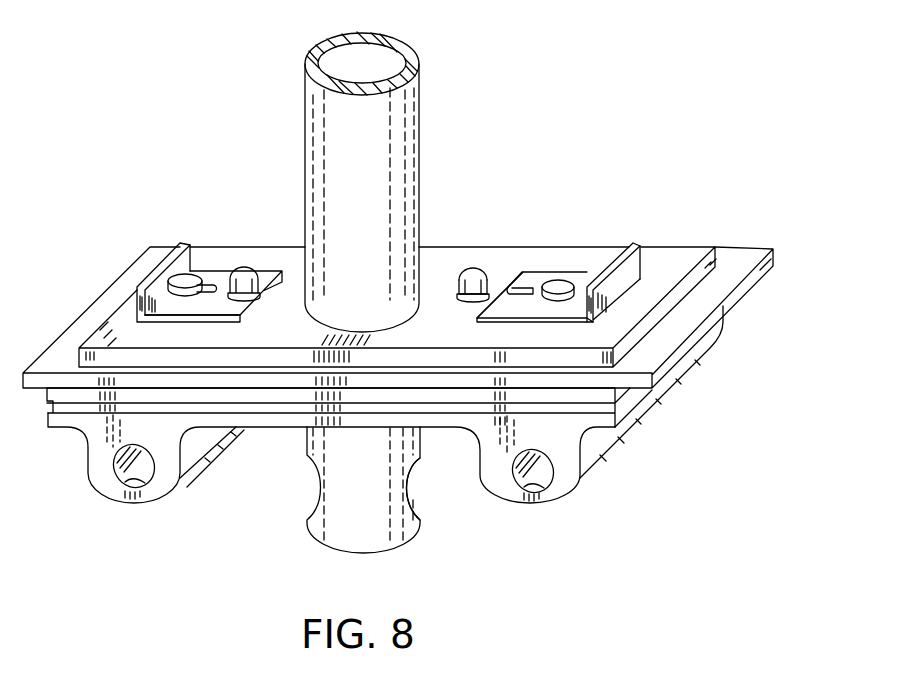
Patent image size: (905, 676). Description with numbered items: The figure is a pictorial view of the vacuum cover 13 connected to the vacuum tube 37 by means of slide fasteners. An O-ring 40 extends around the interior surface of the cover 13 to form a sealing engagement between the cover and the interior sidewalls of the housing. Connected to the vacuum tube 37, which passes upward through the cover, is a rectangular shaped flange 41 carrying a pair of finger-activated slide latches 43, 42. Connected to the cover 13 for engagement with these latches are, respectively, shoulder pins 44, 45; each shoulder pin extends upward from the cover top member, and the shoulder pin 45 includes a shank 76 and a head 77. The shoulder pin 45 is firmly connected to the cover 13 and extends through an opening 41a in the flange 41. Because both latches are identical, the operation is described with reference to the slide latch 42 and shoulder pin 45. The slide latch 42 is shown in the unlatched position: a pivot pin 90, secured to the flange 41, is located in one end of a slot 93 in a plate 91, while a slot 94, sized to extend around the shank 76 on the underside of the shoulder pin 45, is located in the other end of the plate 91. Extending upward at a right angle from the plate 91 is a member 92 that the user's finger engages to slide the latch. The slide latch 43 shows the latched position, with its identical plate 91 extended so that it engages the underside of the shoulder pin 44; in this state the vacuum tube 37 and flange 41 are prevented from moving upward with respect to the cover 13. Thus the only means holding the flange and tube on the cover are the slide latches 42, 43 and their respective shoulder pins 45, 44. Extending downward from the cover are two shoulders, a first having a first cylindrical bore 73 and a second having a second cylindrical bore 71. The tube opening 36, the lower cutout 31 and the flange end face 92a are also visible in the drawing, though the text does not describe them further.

The cover 13 is at (762, 253).
The cutout 31 is at (410, 503).
The tube opening 36 is at (383, 60).
The vacuum tube 37 is at (398, 143).
The O-ring 40 is at (600, 407).
The flange 41 is at (693, 251).
The opening 41a is at (497, 297).
The slide latch 42 is at (632, 233).
The slide latch 43 is at (181, 242).
The shoulder pin 44 is at (241, 266).
The shoulder pin 45 is at (469, 268).
The second cylindrical bore 71 is at (531, 490).
The first cylindrical bore 73 is at (139, 488).
The shank 76 is at (482, 300).
The head 77 is at (486, 293).
The pivot pin 90 is at (563, 283).
The plate 91 is at (212, 276).
The member 92 is at (628, 262).
The flange 92a is at (139, 286).
The slot 93 is at (580, 306).
The slot 94 is at (524, 270).